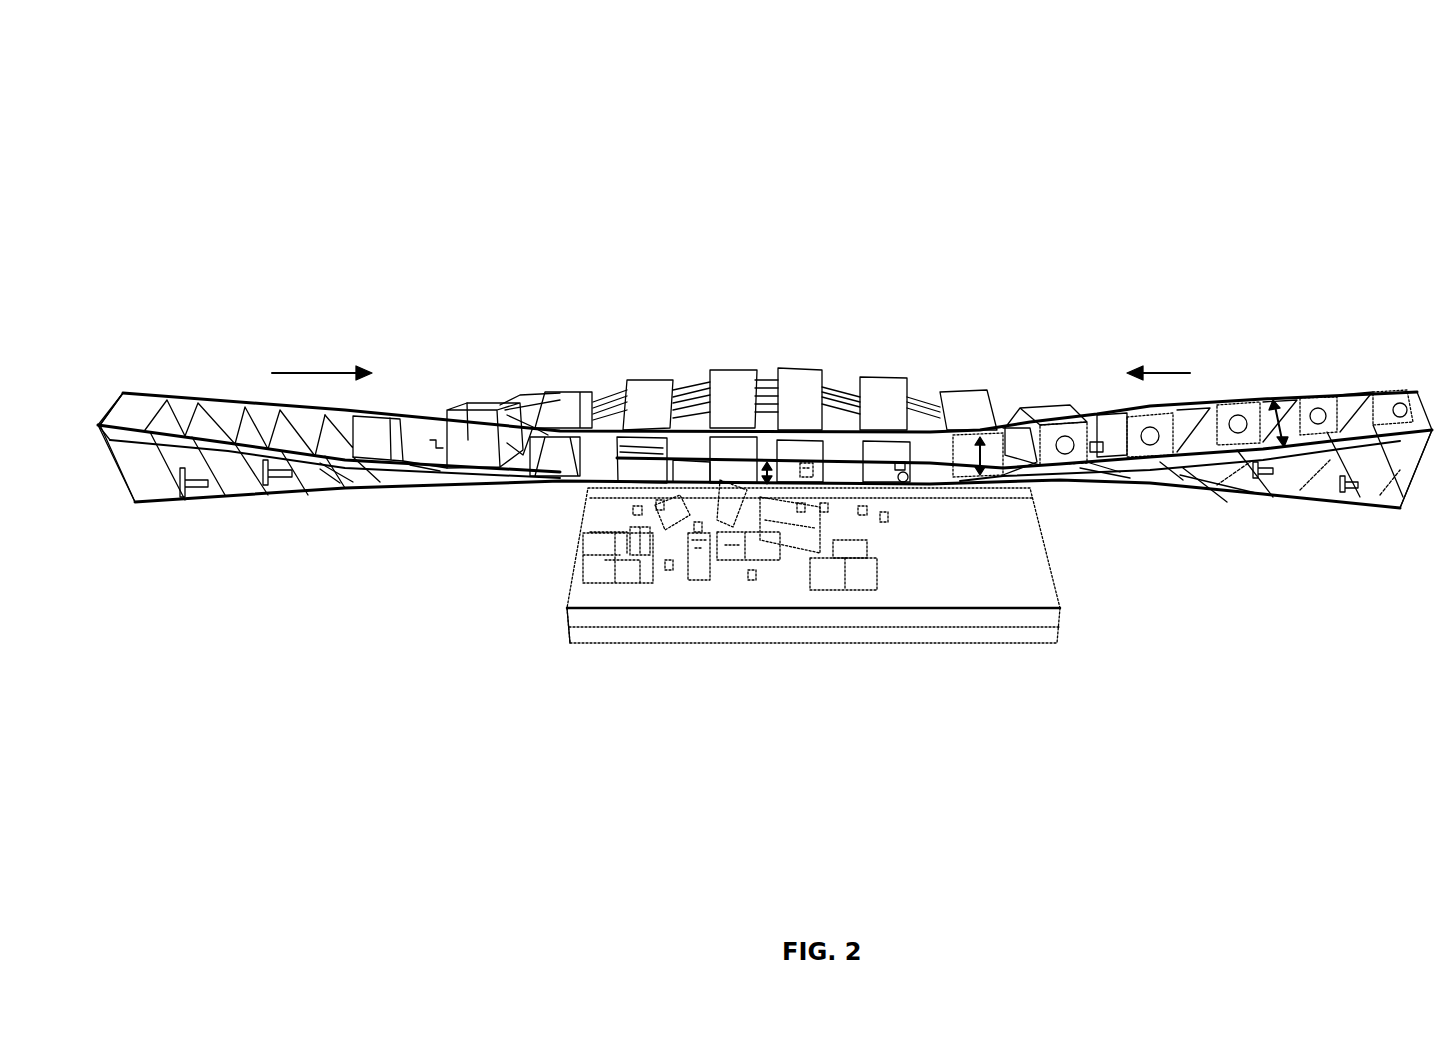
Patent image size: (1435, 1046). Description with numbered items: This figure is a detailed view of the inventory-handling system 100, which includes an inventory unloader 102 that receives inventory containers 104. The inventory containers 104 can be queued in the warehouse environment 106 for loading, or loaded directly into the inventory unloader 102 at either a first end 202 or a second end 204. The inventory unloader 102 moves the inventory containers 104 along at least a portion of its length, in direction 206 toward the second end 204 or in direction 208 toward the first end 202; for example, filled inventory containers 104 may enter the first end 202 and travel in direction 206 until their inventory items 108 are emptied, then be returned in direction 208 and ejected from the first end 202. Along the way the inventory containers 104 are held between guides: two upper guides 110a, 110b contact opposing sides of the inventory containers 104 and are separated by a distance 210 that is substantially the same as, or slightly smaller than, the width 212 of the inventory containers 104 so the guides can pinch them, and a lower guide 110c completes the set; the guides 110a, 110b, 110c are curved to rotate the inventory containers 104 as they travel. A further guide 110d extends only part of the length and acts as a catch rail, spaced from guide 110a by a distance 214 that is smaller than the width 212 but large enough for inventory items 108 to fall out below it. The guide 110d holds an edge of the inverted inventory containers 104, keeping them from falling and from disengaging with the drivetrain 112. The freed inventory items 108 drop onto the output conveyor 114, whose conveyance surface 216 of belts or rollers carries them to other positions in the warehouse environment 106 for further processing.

The inventory-handling system 100 is at (194, 82).
The inventory unloader 102 is at (553, 180).
The inventory containers 104 is at (1403, 505).
The warehouse environment 106 is at (230, 625).
The inventory items 108 is at (587, 563).
The upper guide 110a is at (437, 506).
The upper guide 110b is at (440, 523).
The lower guide 110c is at (1243, 497).
The catch rail guide 110d is at (840, 458).
The drivetrain 112 is at (685, 390).
The output conveyor 114 is at (1057, 642).
The first end 202 is at (1417, 392).
The second end 204 is at (123, 393).
The direction 206 is at (1185, 372).
The direction 208 is at (318, 372).
The distance 210 is at (1285, 428).
The width 212 is at (983, 454).
The distance 214 is at (768, 462).
The conveyance surface 216 is at (1022, 577).